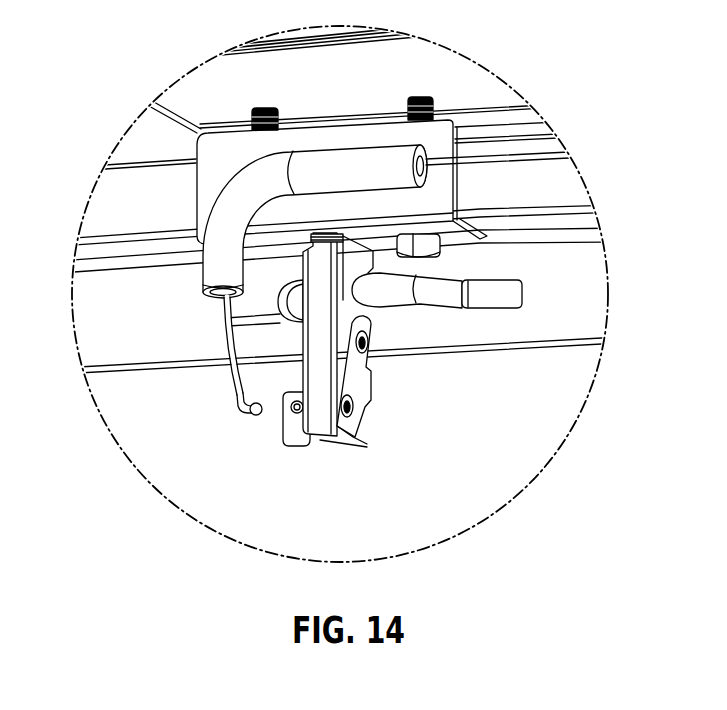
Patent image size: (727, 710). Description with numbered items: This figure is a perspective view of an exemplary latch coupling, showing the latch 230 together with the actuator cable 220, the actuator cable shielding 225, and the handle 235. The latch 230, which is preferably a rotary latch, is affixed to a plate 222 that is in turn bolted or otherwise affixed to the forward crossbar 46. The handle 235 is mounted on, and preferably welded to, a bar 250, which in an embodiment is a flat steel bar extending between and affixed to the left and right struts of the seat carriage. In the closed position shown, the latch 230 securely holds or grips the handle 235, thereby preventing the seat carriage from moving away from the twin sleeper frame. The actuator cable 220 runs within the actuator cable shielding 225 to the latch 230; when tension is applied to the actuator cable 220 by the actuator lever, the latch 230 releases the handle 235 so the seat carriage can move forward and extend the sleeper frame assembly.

The forward crossbar 46 is at (130, 200).
The plate 222 is at (227, 158).
The actuator cable shielding 225 is at (355, 163).
The actuator cable 220 is at (233, 373).
The latch 230 is at (320, 405).
The handle 235 is at (493, 303).
The bar 250 is at (572, 282).